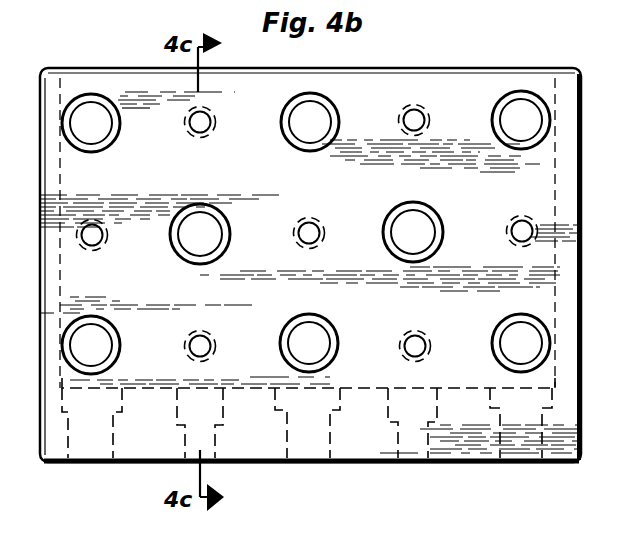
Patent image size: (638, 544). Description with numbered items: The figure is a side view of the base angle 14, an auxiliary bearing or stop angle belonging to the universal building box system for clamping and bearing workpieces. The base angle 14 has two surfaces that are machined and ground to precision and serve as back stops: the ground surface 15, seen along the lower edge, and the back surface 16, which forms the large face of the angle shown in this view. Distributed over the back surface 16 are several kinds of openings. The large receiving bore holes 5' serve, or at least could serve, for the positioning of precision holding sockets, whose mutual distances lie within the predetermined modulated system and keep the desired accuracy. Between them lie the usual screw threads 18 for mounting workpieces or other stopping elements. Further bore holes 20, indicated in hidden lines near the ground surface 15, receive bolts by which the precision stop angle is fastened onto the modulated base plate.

The back surface 16 is at (478, 97).
The base angle 14 is at (474, 465).
The ground surface 15 is at (448, 462).
The receiving bore holes 5' is at (316, 300).
The screw threads 18 is at (416, 108).
The bore holes 20 is at (216, 440).